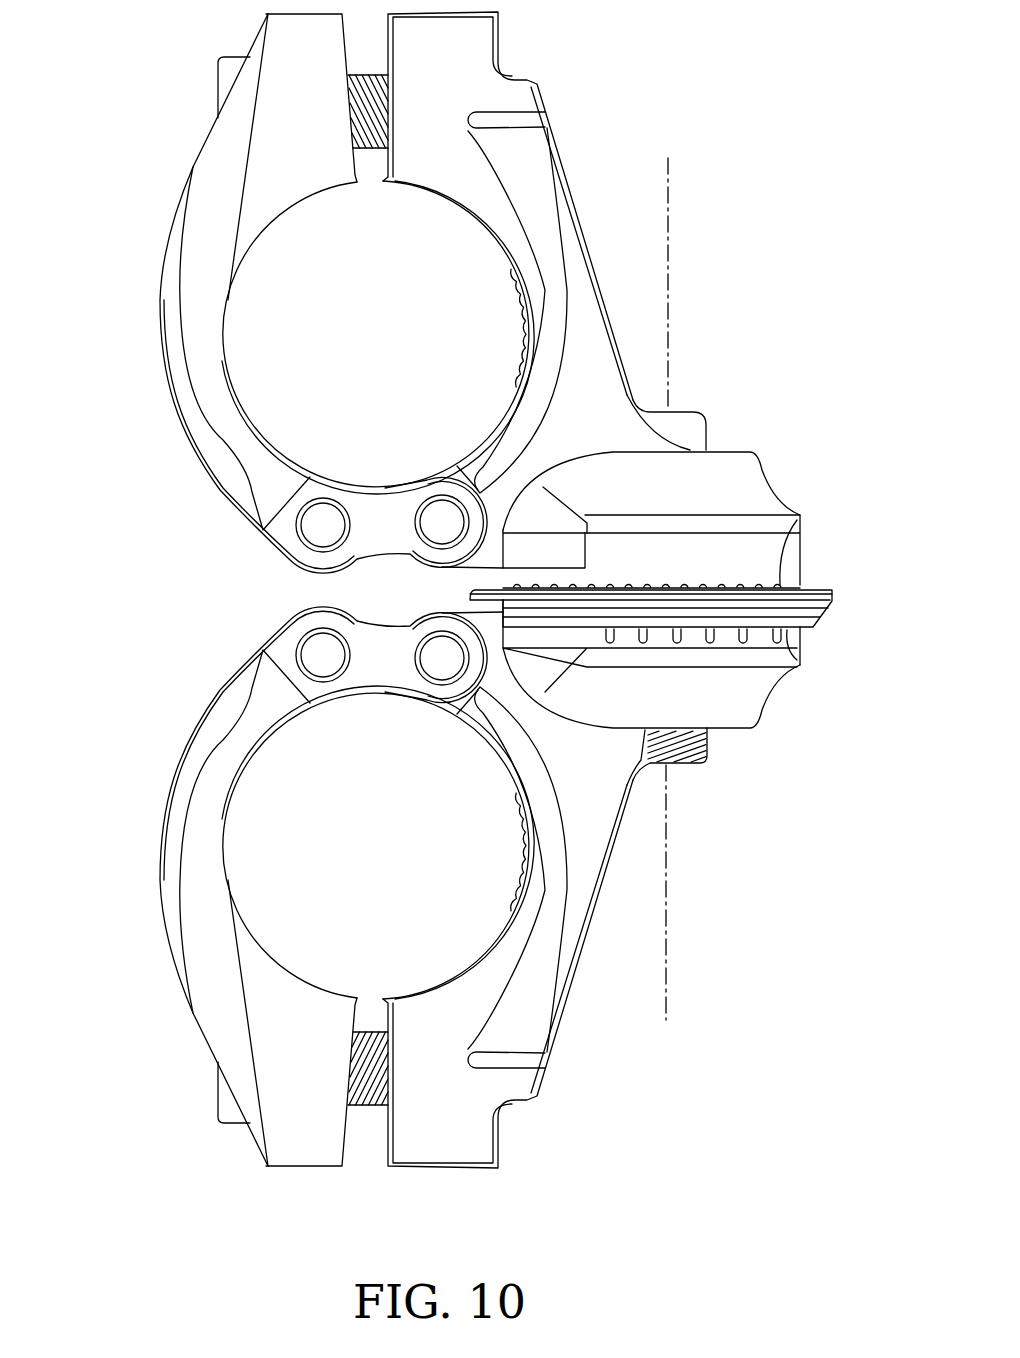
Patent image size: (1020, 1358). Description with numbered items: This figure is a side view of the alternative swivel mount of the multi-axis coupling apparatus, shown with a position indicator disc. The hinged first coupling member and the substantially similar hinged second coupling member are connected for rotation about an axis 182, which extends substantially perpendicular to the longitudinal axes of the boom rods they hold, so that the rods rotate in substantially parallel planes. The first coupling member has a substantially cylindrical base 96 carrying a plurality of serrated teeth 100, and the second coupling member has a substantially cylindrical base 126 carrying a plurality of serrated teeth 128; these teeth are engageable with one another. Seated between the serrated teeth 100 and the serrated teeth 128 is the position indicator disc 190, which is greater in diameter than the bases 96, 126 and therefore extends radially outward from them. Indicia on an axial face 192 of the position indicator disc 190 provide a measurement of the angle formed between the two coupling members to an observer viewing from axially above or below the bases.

The axis 182 is at (670, 211).
The substantially cylindrical base 96 is at (733, 538).
The serrated teeth 100 is at (798, 519).
The axial face 192 is at (820, 590).
The position indicator disc 190 is at (835, 609).
The serrated teeth 128 is at (791, 637).
The substantially cylindrical base 126 is at (752, 716).